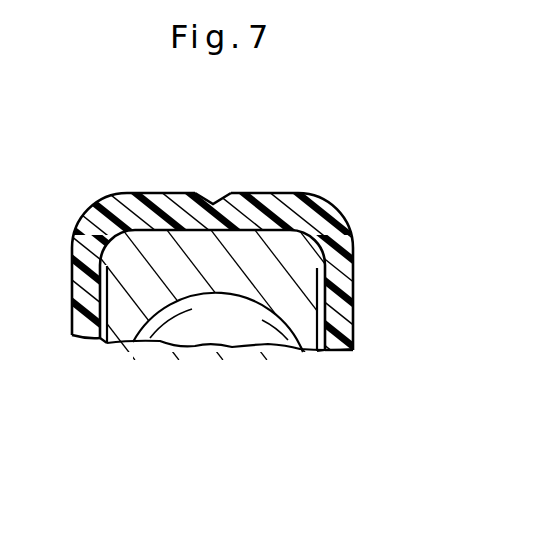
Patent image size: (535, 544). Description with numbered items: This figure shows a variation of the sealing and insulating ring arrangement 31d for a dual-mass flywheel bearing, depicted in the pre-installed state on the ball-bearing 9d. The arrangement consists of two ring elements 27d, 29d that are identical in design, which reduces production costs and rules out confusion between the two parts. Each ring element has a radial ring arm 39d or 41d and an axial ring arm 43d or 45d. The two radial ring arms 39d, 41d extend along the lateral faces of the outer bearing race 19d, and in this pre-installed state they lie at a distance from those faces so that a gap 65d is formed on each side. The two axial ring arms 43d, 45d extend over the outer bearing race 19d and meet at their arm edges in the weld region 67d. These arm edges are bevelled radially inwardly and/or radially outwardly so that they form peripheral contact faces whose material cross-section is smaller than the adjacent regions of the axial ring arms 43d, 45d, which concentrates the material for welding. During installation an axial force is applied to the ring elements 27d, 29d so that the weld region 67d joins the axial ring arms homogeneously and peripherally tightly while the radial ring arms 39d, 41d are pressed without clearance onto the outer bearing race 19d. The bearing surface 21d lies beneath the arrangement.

The ball-bearing 9d is at (196, 357).
The outer bearing race 19d is at (297, 287).
The recess 21d is at (253, 333).
The ring element 27d is at (80, 222).
The ring element 29d is at (342, 233).
The sealing and insulating ring arrangement 31d is at (323, 184).
The radial ring arm 39d is at (78, 289).
The radial ring arm 41d is at (343, 328).
The axial ring arm 43d is at (150, 193).
The axial ring arm 45d is at (267, 193).
The gap 65d is at (103, 348).
The weld region 67d is at (216, 193).